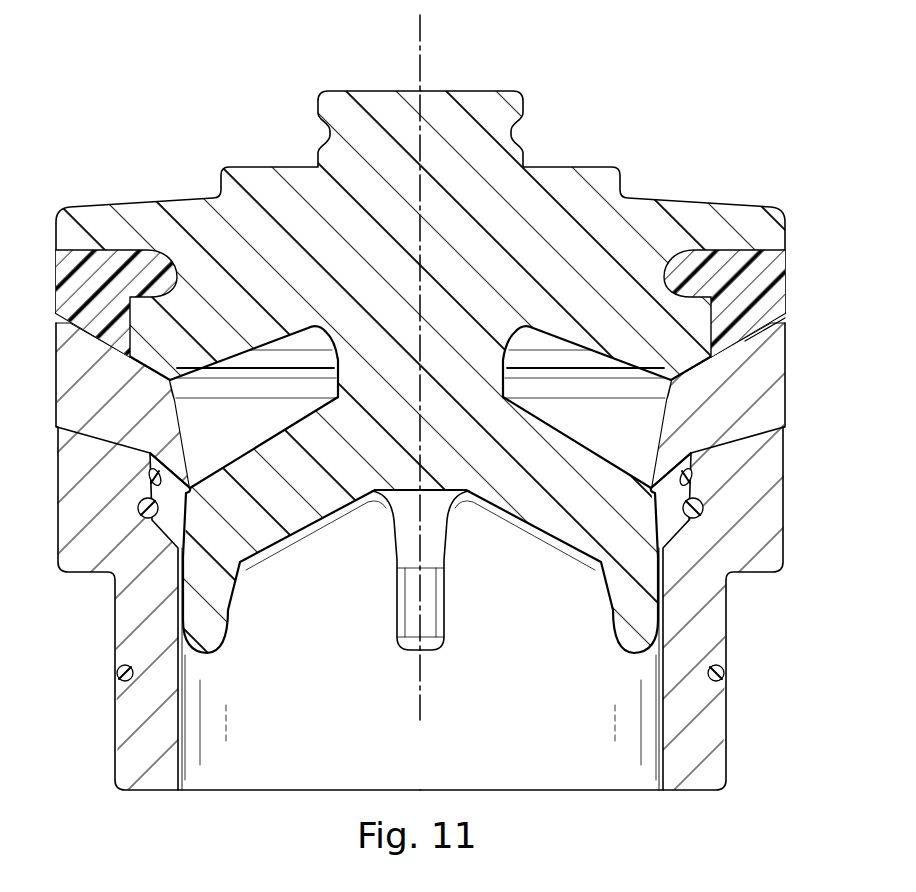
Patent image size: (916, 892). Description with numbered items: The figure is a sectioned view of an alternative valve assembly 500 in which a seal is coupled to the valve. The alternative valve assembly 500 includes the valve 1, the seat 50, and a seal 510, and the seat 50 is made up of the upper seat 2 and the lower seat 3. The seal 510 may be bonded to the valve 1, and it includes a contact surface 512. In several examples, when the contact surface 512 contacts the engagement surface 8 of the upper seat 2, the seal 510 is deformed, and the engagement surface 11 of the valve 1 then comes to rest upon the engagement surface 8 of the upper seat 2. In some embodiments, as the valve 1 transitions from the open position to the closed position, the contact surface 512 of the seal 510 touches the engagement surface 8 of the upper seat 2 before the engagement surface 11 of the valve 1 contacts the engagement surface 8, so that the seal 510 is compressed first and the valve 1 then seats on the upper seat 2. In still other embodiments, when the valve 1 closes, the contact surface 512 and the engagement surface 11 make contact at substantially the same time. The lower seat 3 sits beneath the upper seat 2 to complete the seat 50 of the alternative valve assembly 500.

The alternative valve assembly 500 is at (216, 88).
The valve 1 is at (604, 177).
The seal 510 is at (777, 262).
The contact surface 512 is at (745, 343).
The engagement surface 8 is at (692, 373).
The engagement surface 11 is at (743, 437).
The upper seat 2 is at (774, 384).
The seat 50 is at (820, 427).
The lower seat 3 is at (774, 532).